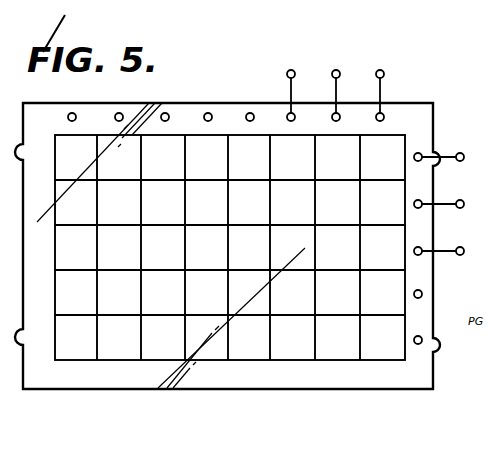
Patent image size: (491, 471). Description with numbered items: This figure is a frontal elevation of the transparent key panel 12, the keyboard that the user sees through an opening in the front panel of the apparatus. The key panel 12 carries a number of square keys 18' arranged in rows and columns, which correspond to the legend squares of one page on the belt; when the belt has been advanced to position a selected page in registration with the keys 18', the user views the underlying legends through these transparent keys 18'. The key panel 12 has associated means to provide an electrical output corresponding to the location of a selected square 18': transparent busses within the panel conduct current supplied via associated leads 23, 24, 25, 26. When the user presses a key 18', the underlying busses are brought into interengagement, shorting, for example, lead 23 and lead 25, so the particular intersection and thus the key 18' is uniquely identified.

The key panel 12 is at (116, 392).
The keys 18' is at (230, 203).
The lead 23 is at (449, 251).
The lead 24 is at (445, 204).
The lead 25 is at (293, 90).
The lead 26 is at (338, 89).